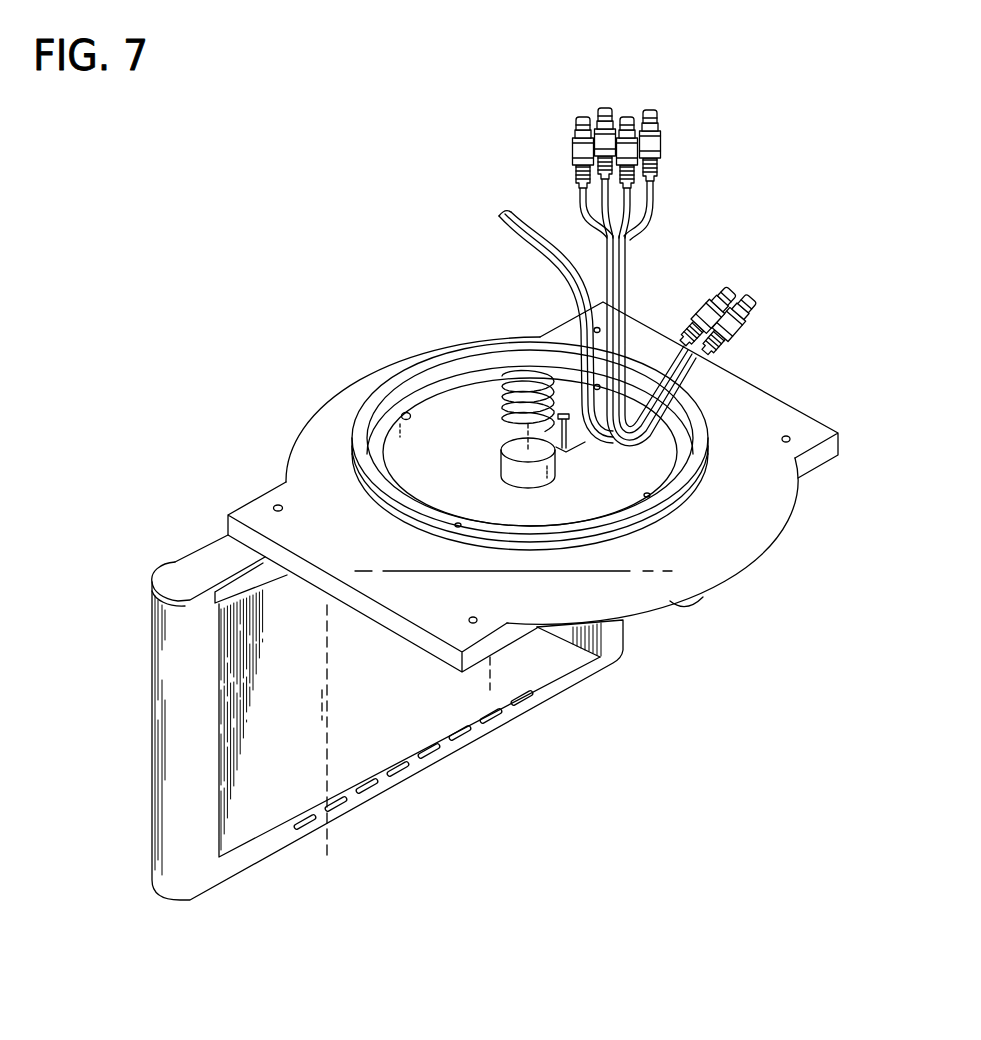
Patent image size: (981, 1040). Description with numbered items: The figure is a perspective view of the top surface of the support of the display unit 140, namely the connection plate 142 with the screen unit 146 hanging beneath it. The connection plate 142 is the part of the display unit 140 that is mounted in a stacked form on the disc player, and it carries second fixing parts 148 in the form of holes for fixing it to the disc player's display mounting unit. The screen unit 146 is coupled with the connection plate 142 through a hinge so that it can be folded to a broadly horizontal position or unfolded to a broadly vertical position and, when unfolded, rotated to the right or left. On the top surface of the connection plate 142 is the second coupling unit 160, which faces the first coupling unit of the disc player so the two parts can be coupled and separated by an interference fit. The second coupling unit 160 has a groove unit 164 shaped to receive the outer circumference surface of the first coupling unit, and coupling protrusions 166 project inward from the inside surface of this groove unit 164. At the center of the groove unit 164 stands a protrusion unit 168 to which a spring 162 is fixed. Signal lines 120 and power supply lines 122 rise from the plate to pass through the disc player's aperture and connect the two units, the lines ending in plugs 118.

The connectors 118 is at (572, 143).
The signal lines 120 is at (653, 210).
The power supply lines 122 is at (583, 270).
The display unit 140 is at (306, 439).
The connection plate 142 is at (503, 640).
The screen unit 146 is at (397, 733).
The second fixing parts 148 is at (276, 505).
The second coupling unit 160 is at (512, 352).
The coil spring 162 is at (516, 362).
The groove unit 164 is at (655, 463).
The coupling protrusions 166 is at (390, 364).
The protrusion unit 168 is at (405, 412).